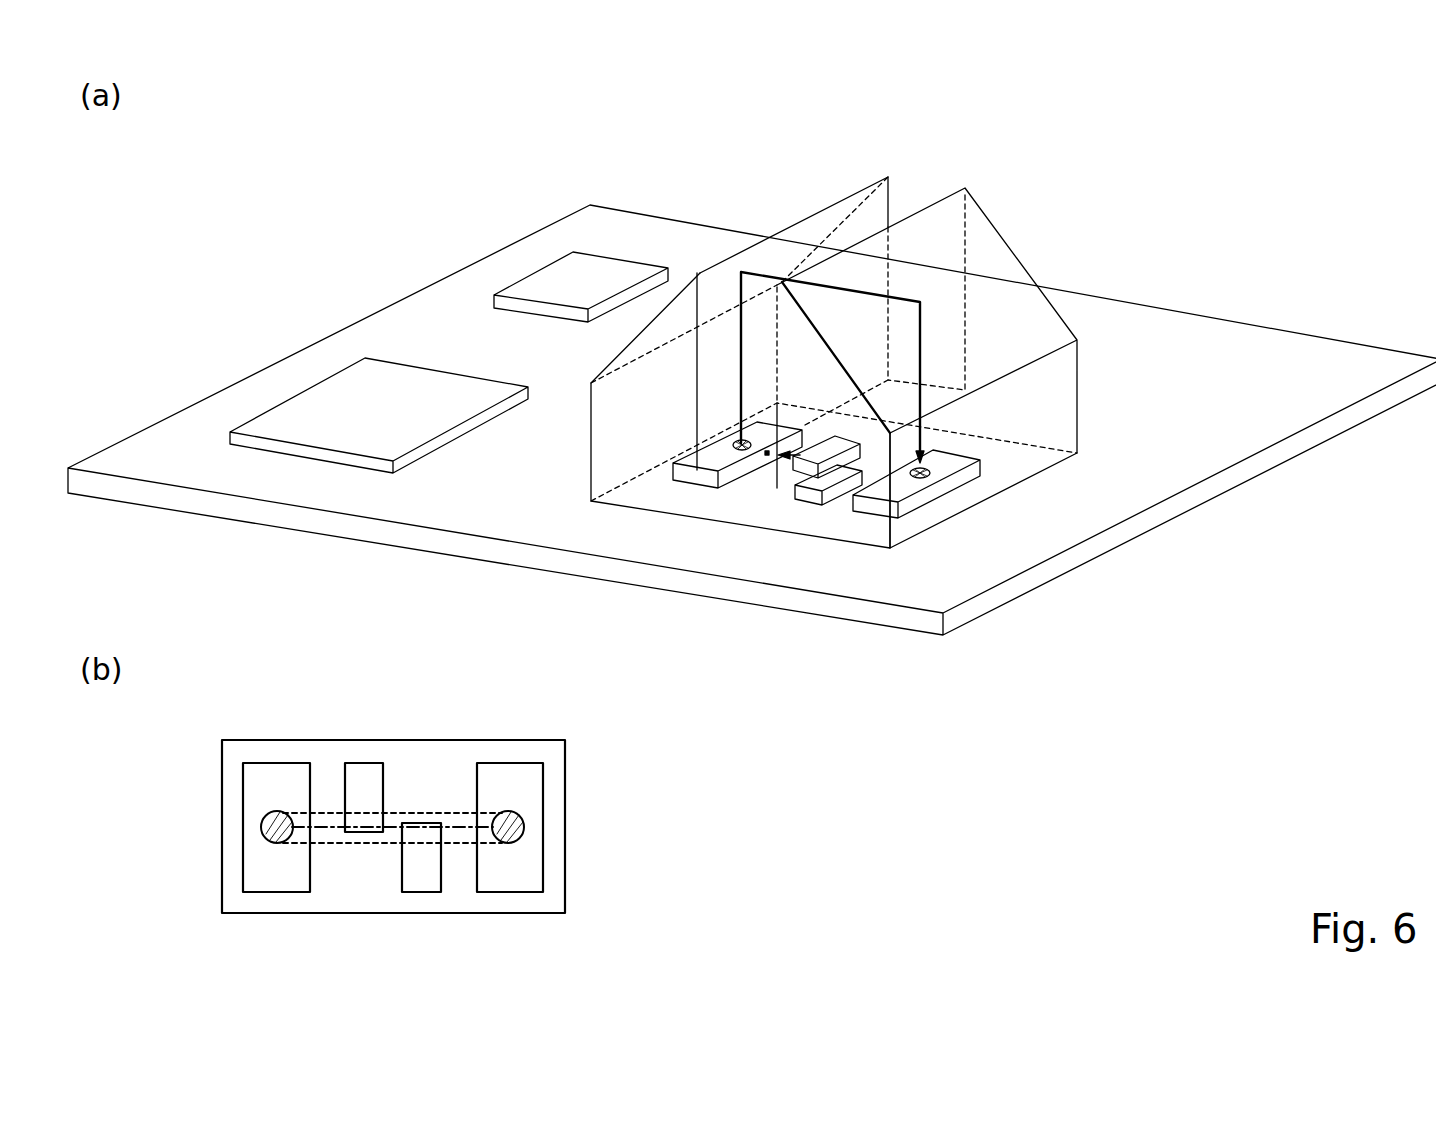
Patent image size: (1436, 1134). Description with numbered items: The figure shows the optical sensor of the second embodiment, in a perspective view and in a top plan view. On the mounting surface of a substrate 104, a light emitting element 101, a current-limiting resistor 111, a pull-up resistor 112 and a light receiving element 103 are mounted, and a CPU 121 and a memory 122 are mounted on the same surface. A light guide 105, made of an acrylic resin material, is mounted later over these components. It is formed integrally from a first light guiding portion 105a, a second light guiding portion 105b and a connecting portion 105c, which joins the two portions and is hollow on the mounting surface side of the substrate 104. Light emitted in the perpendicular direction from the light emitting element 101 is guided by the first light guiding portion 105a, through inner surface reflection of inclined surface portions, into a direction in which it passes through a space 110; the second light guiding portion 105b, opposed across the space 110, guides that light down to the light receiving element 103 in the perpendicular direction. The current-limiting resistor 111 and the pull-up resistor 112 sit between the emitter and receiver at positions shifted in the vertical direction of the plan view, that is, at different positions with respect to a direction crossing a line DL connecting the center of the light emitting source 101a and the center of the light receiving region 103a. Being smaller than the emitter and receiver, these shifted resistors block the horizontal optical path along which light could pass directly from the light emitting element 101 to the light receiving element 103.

The light emitting element 101 is at (687, 478).
The light emitting source 101a is at (275, 843).
The light receiving element 103 is at (937, 490).
The light receiving region 103a is at (513, 835).
The substrate 104 is at (1180, 445).
The light guide 105 is at (1020, 270).
The first light guiding portion 105a is at (867, 182).
The second light guiding portion 105b is at (975, 197).
The connecting portion 105c is at (733, 508).
The space 110 is at (918, 195).
The current-limiting resistor 111 is at (825, 440).
The pull-up resistor 112 is at (810, 493).
The CPU 121 is at (327, 405).
The memory 122 is at (553, 278).
The line DL is at (392, 827).